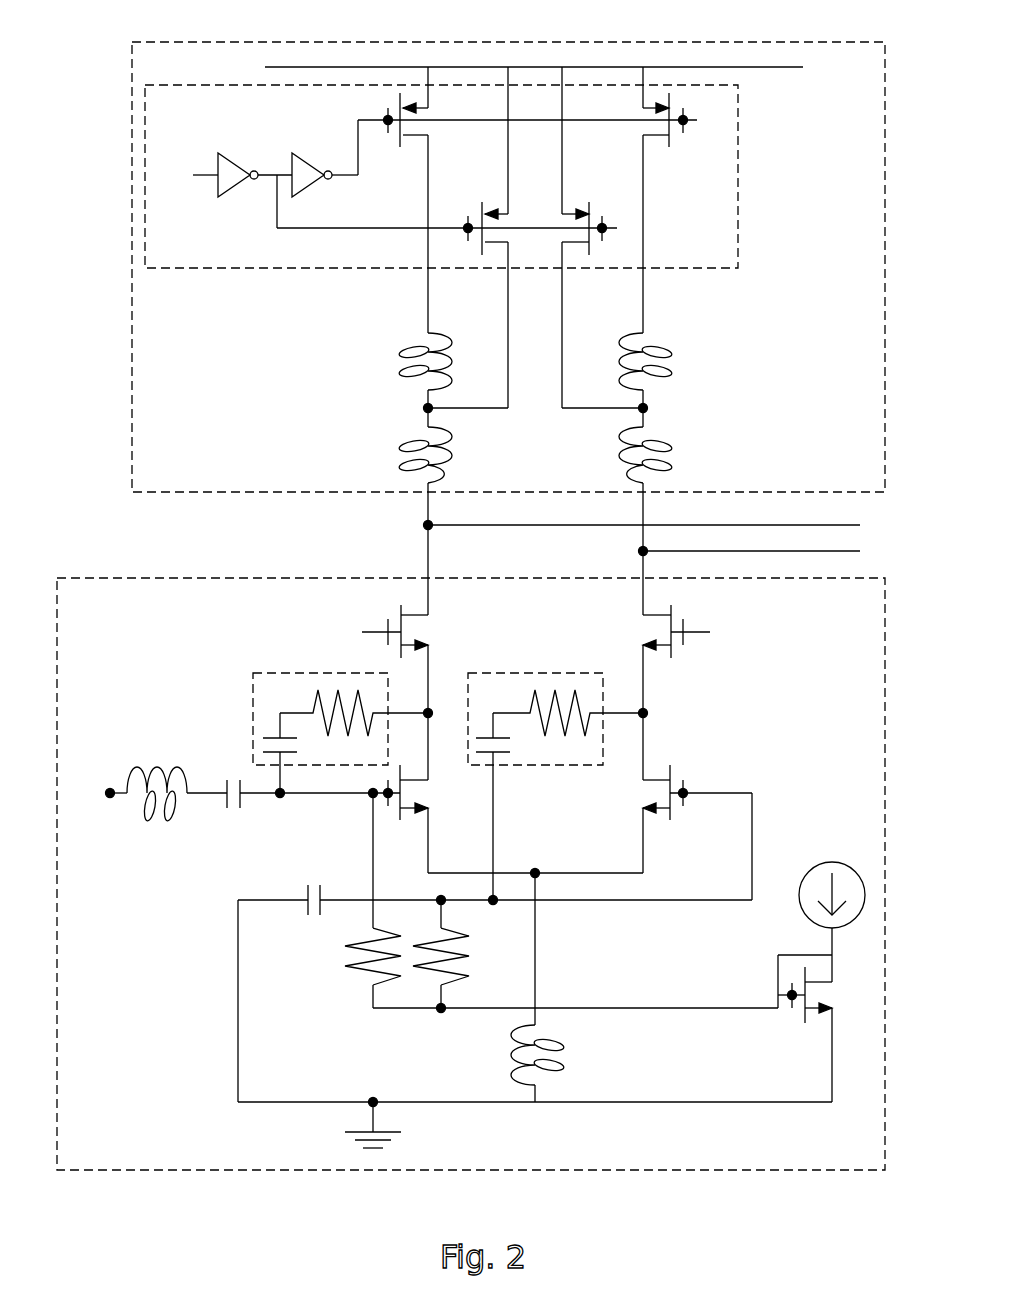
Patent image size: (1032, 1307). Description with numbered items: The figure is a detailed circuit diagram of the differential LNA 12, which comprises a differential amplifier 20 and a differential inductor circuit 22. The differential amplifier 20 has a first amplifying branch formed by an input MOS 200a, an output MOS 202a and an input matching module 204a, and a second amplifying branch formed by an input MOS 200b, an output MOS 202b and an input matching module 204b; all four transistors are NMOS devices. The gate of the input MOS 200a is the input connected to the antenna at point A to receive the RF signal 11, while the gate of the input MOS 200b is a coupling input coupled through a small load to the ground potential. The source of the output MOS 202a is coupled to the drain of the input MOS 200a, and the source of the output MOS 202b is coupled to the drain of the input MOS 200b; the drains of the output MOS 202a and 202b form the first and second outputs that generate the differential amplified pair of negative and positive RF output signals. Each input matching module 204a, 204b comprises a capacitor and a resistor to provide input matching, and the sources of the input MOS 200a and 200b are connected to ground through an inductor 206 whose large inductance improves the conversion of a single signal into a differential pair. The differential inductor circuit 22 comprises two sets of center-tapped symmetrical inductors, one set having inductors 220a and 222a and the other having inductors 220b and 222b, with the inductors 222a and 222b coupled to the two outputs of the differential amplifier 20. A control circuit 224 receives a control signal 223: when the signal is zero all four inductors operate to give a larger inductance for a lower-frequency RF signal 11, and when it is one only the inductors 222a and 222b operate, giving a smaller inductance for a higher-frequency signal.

The differential LNA 12 is at (40, 191).
The differential inductor circuit 22 is at (347, 40).
The differential amplifier 20 is at (258, 577).
The control signal 223 is at (256, 174).
The control circuit 224 is at (738, 207).
The inductor 220a is at (380, 360).
The inductor 220b is at (688, 360).
The inductor 222a is at (380, 460).
The inductor 222b is at (688, 460).
The output MOS 202a is at (428, 632).
The output MOS 202b is at (643, 632).
The input matching module 204a is at (280, 672).
The input matching module 204b is at (590, 672).
The input MOS 200a is at (428, 793).
The input MOS 200b is at (643, 793).
The RF signal 11 is at (235, 792).
The inductor 206 is at (575, 1075).